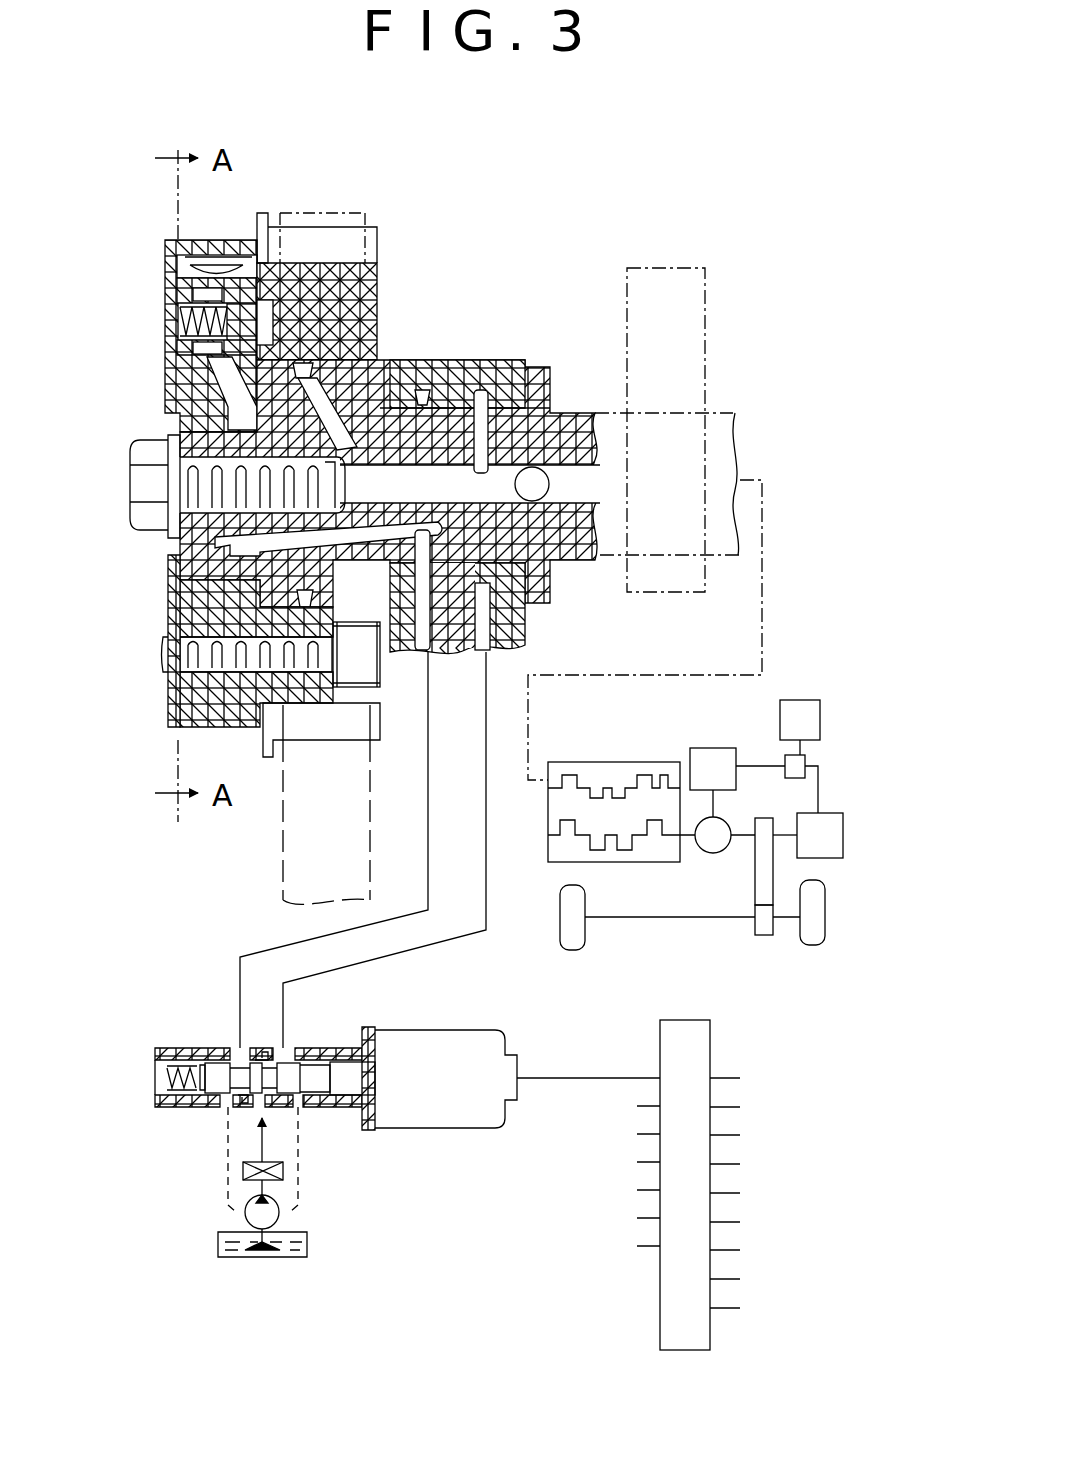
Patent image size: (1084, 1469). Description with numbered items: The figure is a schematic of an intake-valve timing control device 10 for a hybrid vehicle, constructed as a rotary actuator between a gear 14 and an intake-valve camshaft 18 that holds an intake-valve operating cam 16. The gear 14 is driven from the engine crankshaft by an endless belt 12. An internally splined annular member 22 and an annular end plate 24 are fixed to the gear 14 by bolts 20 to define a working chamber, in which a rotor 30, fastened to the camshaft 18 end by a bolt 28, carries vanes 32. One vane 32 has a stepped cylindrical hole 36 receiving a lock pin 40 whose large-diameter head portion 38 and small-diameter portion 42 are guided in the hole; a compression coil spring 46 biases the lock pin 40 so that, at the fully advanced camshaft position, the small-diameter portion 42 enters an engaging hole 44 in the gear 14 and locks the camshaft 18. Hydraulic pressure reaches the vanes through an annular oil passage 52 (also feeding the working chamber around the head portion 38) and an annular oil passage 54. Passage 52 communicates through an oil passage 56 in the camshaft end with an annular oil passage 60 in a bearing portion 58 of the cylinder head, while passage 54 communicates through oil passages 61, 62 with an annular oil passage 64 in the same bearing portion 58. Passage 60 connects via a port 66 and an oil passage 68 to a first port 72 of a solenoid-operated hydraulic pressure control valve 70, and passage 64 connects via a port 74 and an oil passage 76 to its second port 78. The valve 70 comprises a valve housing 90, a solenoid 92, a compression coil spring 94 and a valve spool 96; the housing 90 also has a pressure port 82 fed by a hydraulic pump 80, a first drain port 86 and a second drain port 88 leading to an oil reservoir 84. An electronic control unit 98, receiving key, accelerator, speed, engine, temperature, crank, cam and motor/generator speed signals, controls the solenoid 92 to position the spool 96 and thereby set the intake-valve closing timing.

The intake-valve timing control device 10 is at (293, 150).
The endless belt 12 is at (283, 808).
The gear 14 is at (375, 742).
The intake-valve operating cam 16 is at (705, 293).
The intake-valve camshaft 18 is at (570, 410).
The bolts 20 is at (172, 650).
The internally splined annular member 22 is at (210, 712).
The annular end plate 24 is at (170, 692).
The bolt 28 is at (145, 485).
The rotor 30 is at (190, 402).
The vanes 32 is at (225, 283).
The stepped cylindrical hole 36 is at (202, 262).
The large-diameter head portion 38 is at (193, 347).
The lock pin 40 is at (170, 298).
The small-diameter portion 42 is at (322, 275).
The engaging hole 44 is at (300, 292).
The compression coil spring 46 is at (183, 320).
The annular oil passage 52 is at (243, 550).
The annular oil passage 54 is at (272, 326).
The oil passage 56 is at (520, 612).
The bearing portion 58 is at (505, 362).
The annular oil passage 60 is at (438, 364).
The oil passage 61 is at (392, 385).
The oil passage 62 is at (562, 520).
The annular oil passage 64 is at (475, 362).
The port 66 is at (428, 654).
The oil passage 68 is at (427, 808).
The solenoid-operated hydraulic pressure control valve 70 is at (294, 1078).
The first port 72 is at (238, 1050).
The port 74 is at (490, 654).
The oil passage 76 is at (487, 782).
The second port 78 is at (283, 1050).
The hydraulic pump 80 is at (247, 1207).
The pressure port 82 is at (257, 1113).
The oil reservoir 84 is at (218, 1245).
The first drain port 86 is at (222, 1113).
The second drain port 88 is at (305, 1113).
The valve housing 90 is at (177, 1047).
The solenoid 92 is at (463, 1038).
The compression coil spring 94 is at (162, 1072).
The valve spool 96 is at (370, 1078).
The electronic control unit (ECU) 98 is at (678, 1030).